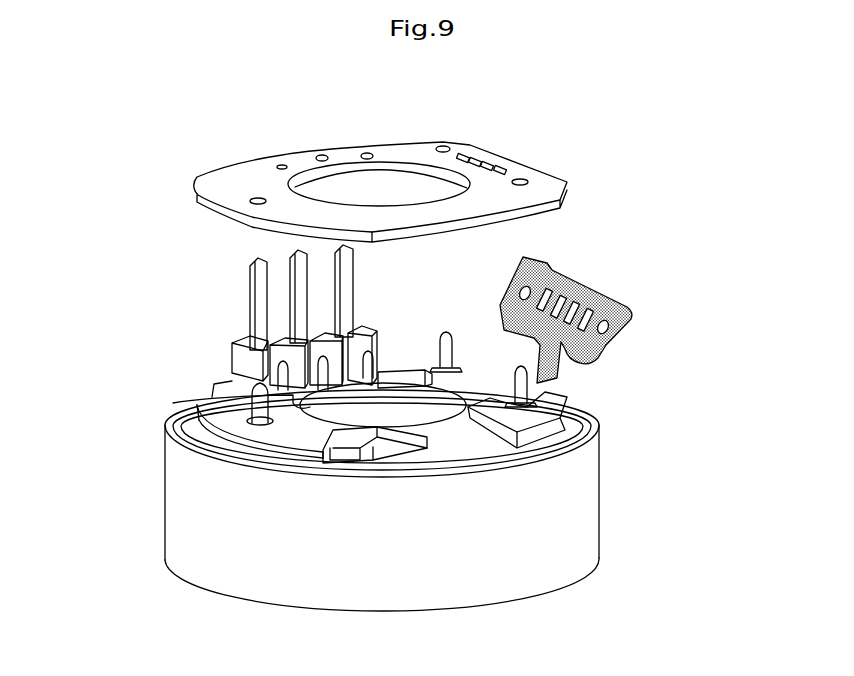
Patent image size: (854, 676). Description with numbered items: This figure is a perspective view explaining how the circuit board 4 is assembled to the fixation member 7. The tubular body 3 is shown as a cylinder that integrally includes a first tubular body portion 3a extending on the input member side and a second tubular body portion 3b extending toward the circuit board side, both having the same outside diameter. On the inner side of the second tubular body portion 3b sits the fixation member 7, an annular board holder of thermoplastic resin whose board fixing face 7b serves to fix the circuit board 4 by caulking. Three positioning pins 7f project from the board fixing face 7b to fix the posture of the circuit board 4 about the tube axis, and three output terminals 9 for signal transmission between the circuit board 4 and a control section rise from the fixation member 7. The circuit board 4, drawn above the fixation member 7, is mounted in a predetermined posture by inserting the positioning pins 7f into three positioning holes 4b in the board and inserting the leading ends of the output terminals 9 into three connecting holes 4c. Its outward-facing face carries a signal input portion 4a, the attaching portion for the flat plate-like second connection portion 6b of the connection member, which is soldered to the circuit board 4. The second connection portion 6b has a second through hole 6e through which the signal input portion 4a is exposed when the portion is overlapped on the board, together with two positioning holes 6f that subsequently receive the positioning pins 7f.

The tubular body 3 is at (617, 507).
The first tubular body portion 3a is at (535, 597).
The second tubular body portion 3b is at (583, 416).
The circuit board 4 is at (178, 180).
The signal input portion 4a is at (481, 158).
The positioning holes 4b is at (257, 198).
The connecting holes 4c is at (320, 156).
The second connection portion 6b is at (609, 345).
The second through hole 6e is at (571, 298).
The positioning holes 6f is at (525, 286).
The fixation member 7 is at (195, 347).
The board fixing face 7b is at (474, 373).
The positioning pins 7f is at (252, 400).
The output terminals 9 is at (232, 260).